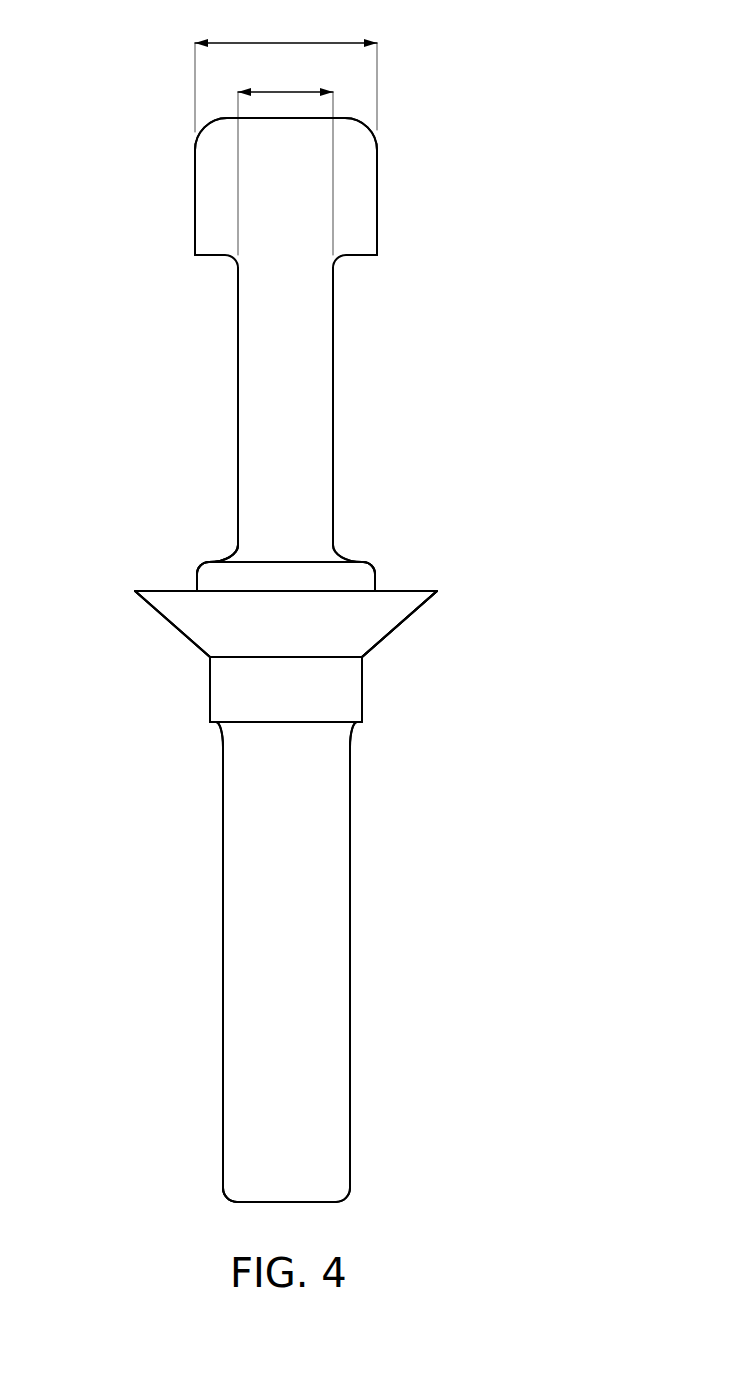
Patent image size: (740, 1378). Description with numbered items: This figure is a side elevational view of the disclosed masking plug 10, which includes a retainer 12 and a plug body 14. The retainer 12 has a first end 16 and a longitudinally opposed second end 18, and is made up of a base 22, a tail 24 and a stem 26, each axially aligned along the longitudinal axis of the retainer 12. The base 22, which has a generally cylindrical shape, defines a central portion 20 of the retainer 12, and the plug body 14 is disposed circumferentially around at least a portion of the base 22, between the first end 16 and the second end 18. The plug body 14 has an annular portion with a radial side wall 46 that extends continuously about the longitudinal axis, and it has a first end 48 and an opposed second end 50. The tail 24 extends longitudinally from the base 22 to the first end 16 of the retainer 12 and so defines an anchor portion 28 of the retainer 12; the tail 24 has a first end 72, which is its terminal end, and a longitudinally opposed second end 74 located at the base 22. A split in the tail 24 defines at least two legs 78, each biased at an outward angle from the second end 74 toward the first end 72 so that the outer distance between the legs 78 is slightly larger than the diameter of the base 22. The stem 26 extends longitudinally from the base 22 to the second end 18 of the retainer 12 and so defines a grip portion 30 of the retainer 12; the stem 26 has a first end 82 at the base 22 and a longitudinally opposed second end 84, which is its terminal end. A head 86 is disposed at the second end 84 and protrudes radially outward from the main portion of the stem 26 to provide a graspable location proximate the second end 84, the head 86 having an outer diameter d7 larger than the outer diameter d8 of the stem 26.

The masking plug 10 is at (508, 223).
The retainer 12 is at (358, 561).
The plug body 14 is at (412, 591).
The first end 16 is at (368, 1193).
The second end 18 is at (377, 125).
The central portion 20 is at (480, 597).
The base 22 is at (203, 562).
The tail 24 is at (350, 748).
The stem 26 is at (333, 338).
The anchor portion 28 is at (387, 917).
The grip portion 30 is at (360, 418).
The radial side wall 46 is at (403, 622).
The first end 48 is at (188, 663).
The second end 50 is at (138, 575).
The first end 72 is at (198, 1182).
The second end 74 is at (193, 707).
The leg 78 is at (338, 1055).
The first end 82 is at (227, 528).
The second end 84 is at (185, 153).
The head 86 is at (377, 202).
The outer diameter of the head d7 is at (278, 43).
The outer diameter of the stem d8 is at (283, 92).